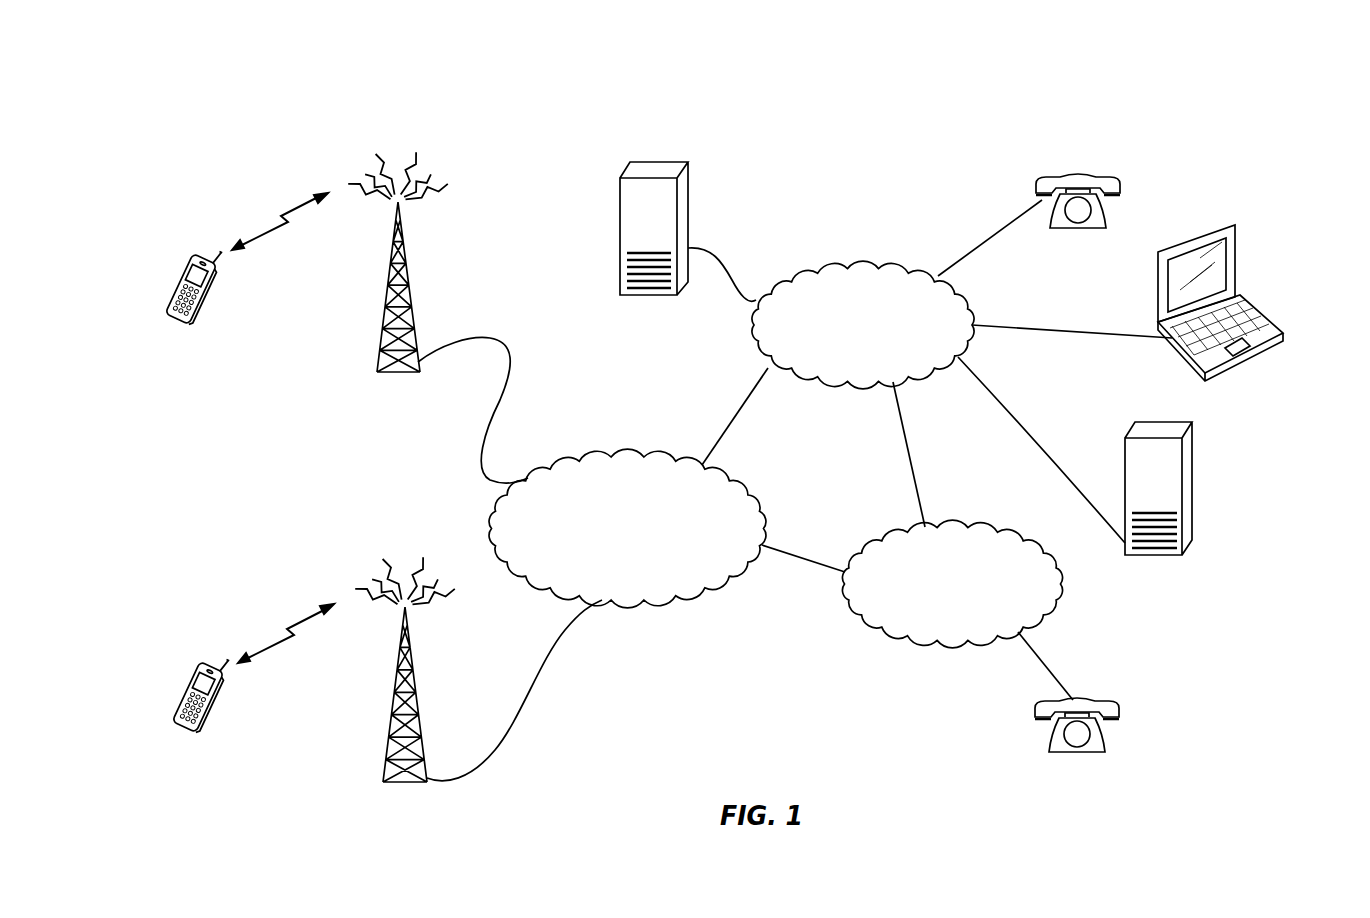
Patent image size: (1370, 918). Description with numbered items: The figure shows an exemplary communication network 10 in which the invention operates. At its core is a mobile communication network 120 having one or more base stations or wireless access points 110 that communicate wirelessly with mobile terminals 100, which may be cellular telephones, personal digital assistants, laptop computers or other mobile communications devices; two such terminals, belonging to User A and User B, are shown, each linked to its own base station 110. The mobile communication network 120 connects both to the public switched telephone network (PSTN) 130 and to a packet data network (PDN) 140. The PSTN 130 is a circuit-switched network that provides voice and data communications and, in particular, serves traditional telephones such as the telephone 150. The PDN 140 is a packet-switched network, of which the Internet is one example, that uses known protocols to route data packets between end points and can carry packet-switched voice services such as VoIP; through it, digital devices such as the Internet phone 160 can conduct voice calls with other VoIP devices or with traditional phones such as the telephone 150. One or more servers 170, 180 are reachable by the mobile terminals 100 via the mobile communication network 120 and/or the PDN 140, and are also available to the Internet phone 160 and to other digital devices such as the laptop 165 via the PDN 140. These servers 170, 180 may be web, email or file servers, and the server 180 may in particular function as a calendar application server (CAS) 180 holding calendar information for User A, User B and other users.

The communication network 10 is at (975, 96).
The mobile terminals 100 is at (206, 302).
The base stations or wireless access points 110 is at (414, 292).
The mobile communication network 120 is at (610, 576).
The public switched telephone network (PSTN) 130 is at (975, 604).
The packet data network (PDN) 140 is at (846, 349).
The telephone 150 is at (1085, 752).
The Internet phone 160 is at (1083, 174).
The laptop 165 is at (1238, 257).
The server 170 is at (1193, 462).
The calendar application server (CAS) 180 is at (620, 199).